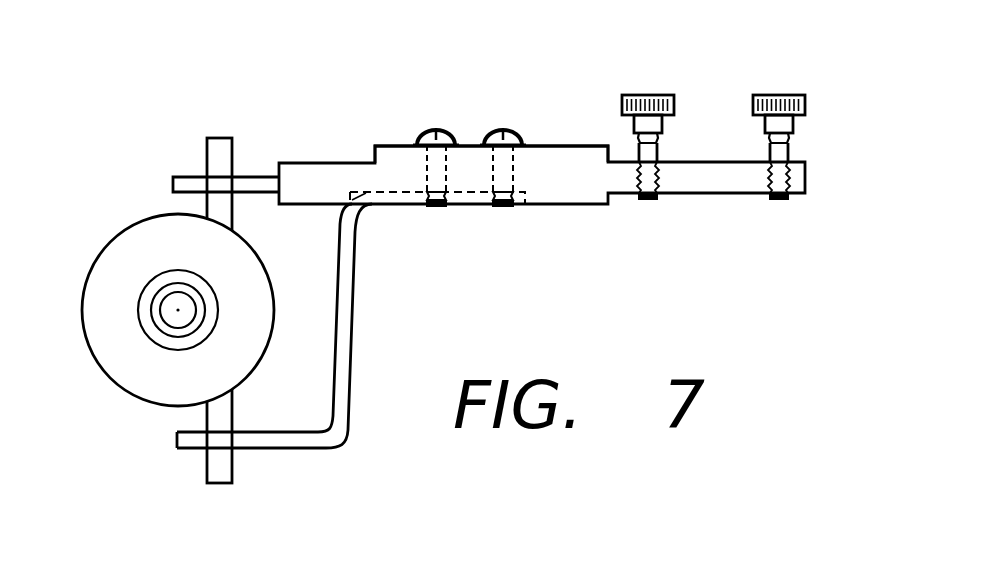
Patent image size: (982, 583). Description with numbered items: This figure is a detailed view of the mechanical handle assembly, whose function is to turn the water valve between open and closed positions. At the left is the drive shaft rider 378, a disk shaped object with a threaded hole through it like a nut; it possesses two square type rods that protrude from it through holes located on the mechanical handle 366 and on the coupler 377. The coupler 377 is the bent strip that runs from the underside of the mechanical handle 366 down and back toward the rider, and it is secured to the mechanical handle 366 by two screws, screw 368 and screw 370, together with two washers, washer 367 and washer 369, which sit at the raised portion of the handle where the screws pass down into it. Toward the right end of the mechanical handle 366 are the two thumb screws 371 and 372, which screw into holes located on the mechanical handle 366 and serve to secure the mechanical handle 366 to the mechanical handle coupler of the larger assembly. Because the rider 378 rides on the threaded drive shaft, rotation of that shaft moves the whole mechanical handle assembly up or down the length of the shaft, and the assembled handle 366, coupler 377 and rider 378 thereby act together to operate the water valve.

The mechanical handle 366 is at (322, 172).
The washer 367 is at (417, 143).
The screw 368 is at (450, 138).
The washer 369 is at (523, 147).
The screw 370 is at (513, 138).
The thumb screw 371 is at (670, 100).
The thumb screw 372 is at (805, 100).
The coupler 377 is at (332, 438).
The drive shaft rider 378 is at (120, 263).